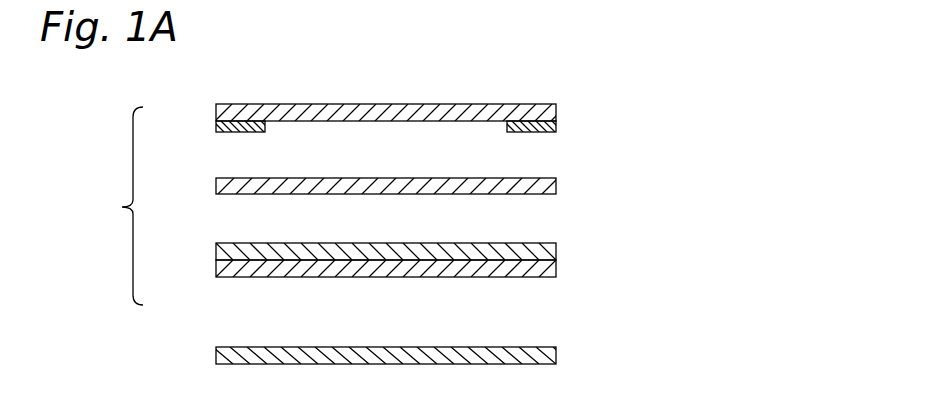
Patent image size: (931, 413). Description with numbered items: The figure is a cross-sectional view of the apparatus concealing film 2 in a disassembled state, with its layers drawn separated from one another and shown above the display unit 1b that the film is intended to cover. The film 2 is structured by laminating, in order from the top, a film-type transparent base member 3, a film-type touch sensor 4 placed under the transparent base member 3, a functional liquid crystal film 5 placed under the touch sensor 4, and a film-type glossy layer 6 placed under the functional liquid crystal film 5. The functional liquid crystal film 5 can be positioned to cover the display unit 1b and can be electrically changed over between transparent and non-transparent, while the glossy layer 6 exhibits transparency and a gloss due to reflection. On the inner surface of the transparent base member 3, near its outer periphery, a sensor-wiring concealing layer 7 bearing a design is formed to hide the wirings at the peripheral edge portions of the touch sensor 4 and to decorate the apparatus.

The display unit 1b is at (215, 355).
The apparatus concealing film 2 is at (120, 206).
The transparent base member 3 is at (463, 103).
The touch sensor 4 is at (215, 183).
The functional liquid crystal film 5 is at (215, 247).
The glossy layer 6 is at (215, 269).
The sensor-wiring concealing layer 7 is at (219, 133).